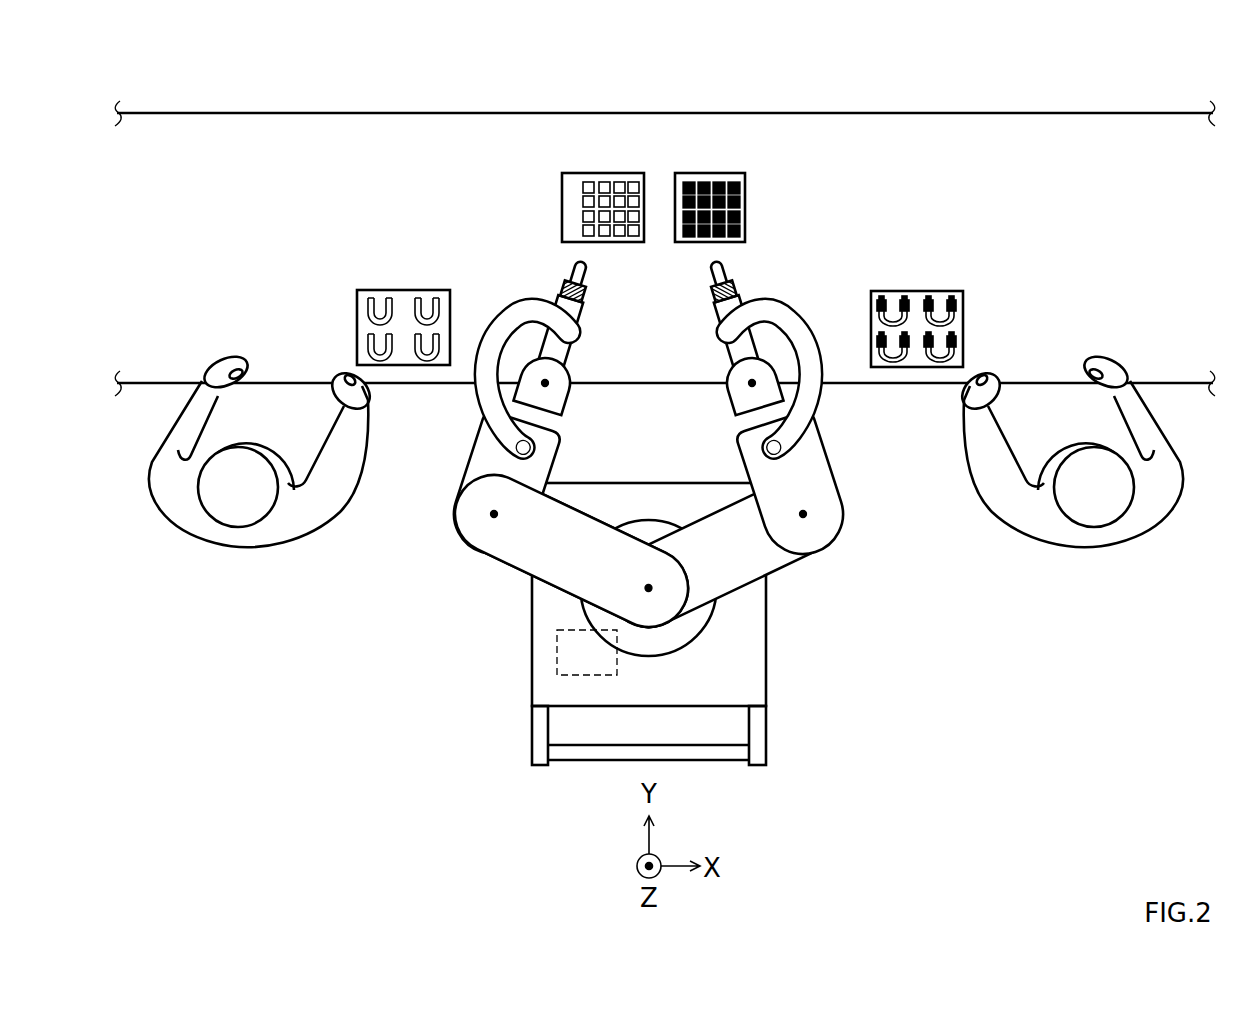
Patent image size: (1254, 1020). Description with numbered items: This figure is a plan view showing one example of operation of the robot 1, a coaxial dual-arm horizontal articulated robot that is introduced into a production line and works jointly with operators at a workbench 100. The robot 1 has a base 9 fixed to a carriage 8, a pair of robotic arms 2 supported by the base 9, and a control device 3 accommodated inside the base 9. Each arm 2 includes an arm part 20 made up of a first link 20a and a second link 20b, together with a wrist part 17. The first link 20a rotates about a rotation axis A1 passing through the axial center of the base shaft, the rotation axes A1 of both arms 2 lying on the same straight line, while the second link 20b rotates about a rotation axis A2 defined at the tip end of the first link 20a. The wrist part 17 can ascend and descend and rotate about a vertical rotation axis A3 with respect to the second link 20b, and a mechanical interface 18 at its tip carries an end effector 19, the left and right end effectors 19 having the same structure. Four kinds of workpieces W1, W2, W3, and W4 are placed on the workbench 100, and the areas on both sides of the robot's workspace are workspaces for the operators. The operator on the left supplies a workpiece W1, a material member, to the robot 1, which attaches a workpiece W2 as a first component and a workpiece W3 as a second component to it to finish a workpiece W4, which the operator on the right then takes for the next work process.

The robot 1 is at (827, 83).
The workbench 100 is at (1091, 113).
The robotic arm 2 is at (497, 563).
The control device 3 is at (557, 649).
The carriage 8 is at (772, 618).
The base 9 is at (748, 602).
The wrist part 17 is at (572, 394).
The mechanical interface 18 is at (568, 288).
The end effector 19 is at (574, 266).
The arm part 20 is at (406, 428).
The first link 20a is at (478, 555).
The second link 20b is at (476, 447).
The rotation axis A1 is at (652, 591).
The rotation axis A2 is at (497, 516).
The rotation axis A3 is at (548, 382).
The workpiece W1 is at (400, 290).
The workpiece W2 is at (607, 173).
The workpiece W3 is at (716, 173).
The workpiece W4 is at (914, 291).